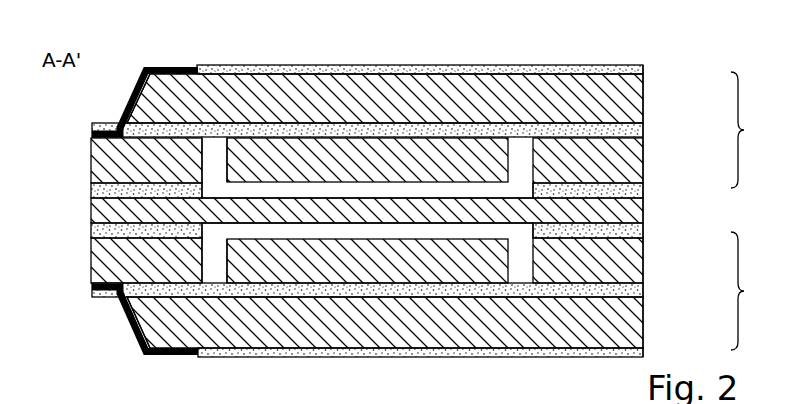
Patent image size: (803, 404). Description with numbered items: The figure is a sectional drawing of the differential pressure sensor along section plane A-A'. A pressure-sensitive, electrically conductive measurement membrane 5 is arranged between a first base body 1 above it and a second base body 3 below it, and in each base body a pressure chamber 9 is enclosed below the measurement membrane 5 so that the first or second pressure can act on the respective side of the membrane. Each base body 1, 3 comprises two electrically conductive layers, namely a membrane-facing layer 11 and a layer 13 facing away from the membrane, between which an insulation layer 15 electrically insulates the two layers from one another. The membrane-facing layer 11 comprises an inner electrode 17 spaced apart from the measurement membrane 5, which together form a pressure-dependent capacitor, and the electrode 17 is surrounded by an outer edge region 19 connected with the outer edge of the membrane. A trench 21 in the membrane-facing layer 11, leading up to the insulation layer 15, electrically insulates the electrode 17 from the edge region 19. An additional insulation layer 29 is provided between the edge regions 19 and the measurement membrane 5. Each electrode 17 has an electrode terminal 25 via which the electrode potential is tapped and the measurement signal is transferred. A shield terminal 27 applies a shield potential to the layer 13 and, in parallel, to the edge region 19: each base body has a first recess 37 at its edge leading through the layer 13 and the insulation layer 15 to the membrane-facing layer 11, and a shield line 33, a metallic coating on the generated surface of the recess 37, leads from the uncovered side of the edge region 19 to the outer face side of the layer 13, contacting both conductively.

The first base body 1 is at (746, 130).
The second base body 3 is at (746, 291).
The measurement membrane 5 is at (630, 212).
The pressure chamber 9 is at (435, 190).
The membrane-facing layer 11 is at (644, 162).
The layer facing away from the membrane 13 is at (644, 95).
The insulation layer 15 is at (630, 133).
The electrode 17 is at (330, 153).
The outer edge region 19 is at (97, 162).
The trench 21 is at (210, 150).
The electrode terminal 25 is at (420, 234).
The shield terminal 27 is at (124, 74).
The insulation layer 29 is at (100, 193).
The shield line 33 is at (113, 124).
The first recess 37 is at (107, 106).